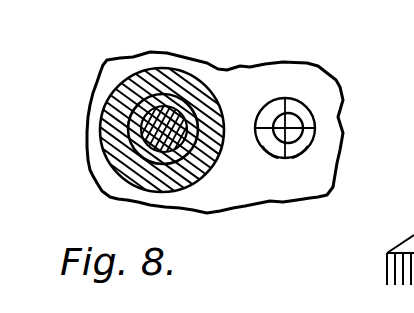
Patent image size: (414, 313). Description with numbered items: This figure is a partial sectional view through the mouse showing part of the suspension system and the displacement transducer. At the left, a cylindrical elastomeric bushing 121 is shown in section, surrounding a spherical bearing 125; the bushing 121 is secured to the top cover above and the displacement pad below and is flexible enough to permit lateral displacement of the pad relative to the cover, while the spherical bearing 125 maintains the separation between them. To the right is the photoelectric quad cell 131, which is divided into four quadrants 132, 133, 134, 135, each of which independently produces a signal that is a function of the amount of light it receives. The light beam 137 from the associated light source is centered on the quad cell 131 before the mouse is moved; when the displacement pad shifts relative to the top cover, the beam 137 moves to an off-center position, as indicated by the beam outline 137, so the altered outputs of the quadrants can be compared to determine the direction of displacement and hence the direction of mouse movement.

The elastomeric bushing 121 is at (133, 72).
The spherical bearing 125 is at (142, 133).
The photoelectric quad cell 131 is at (278, 98).
The quadrant 132 is at (265, 110).
The quadrant 133 is at (275, 150).
The quadrant 134 is at (298, 147).
The quadrant 135 is at (303, 116).
The light beam 137 is at (303, 147).